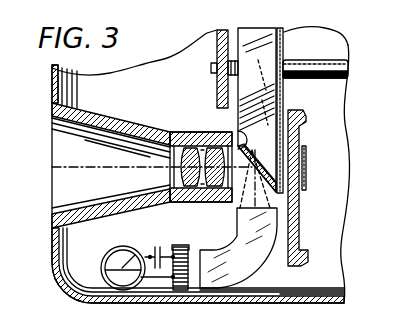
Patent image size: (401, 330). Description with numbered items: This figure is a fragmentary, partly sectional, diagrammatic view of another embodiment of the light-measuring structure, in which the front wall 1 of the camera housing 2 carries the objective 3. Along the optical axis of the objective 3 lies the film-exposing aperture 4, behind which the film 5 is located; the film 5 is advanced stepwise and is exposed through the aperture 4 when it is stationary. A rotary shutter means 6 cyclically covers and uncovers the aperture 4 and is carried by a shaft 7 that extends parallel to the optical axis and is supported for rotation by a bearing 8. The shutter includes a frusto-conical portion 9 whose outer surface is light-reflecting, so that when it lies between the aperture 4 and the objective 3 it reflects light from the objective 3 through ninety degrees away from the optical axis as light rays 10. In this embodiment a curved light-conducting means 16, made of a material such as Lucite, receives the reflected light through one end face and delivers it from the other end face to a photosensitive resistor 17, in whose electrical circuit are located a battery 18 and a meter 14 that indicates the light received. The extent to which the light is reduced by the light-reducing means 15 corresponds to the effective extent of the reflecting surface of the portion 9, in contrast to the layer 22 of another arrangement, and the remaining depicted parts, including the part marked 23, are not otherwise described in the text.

The front wall 1 is at (52, 74).
The camera housing 2 is at (344, 236).
The objective 3 is at (52, 190).
The film-exposing aperture 4 is at (300, 132).
The film 5 is at (308, 170).
The rotary shutter means 6 is at (286, 46).
The shaft 7 is at (342, 62).
The bearing 8 is at (222, 30).
The frusto-conical portion 9 is at (264, 29).
The light rays 10 is at (233, 201).
The meter 14 is at (262, 22).
The light-reducing means 15 is at (238, 132).
The light-conducting means 16 is at (250, 270).
The photosensitive resistor 17 is at (180, 291).
The battery 18 is at (158, 246).
The layer 22 is at (272, 310).
The bottom wall section 23 is at (312, 312).